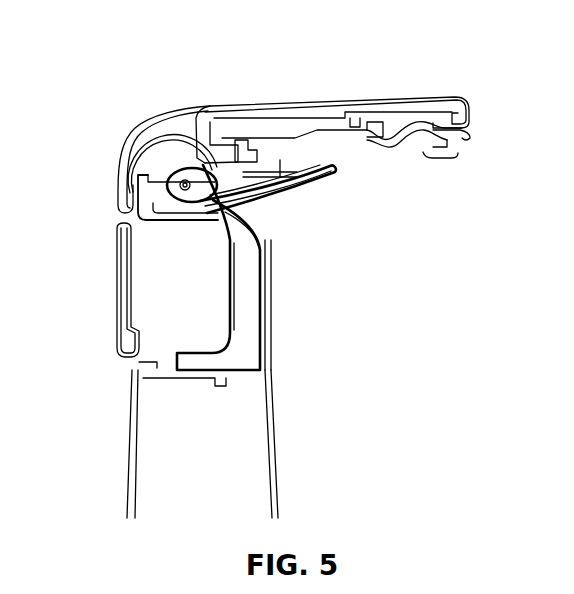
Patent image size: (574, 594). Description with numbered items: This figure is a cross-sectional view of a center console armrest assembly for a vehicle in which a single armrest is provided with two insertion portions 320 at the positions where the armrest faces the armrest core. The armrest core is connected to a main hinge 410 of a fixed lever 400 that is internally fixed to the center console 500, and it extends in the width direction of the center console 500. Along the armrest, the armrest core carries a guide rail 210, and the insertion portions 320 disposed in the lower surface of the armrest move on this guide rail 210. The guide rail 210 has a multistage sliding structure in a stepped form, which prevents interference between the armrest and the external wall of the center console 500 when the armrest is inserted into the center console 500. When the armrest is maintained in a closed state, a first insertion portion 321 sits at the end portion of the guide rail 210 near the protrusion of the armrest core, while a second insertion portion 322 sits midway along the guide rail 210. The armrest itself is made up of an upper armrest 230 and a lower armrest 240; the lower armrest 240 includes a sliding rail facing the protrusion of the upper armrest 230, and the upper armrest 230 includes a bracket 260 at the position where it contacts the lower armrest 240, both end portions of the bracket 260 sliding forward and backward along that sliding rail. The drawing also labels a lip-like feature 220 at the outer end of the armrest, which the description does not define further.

The guide rail 210 is at (282, 172).
The lip curve 220 is at (423, 137).
The upper armrest 230 is at (430, 98).
The lower armrest 240 is at (456, 152).
The bracket 260 is at (298, 132).
The insertion portions 320 is at (366, 266).
The first insertion portion 321 is at (348, 190).
The second insertion portion 322 is at (268, 205).
The fixed lever 400 is at (245, 346).
The main hinge 410 is at (180, 182).
The center console 500 is at (118, 308).